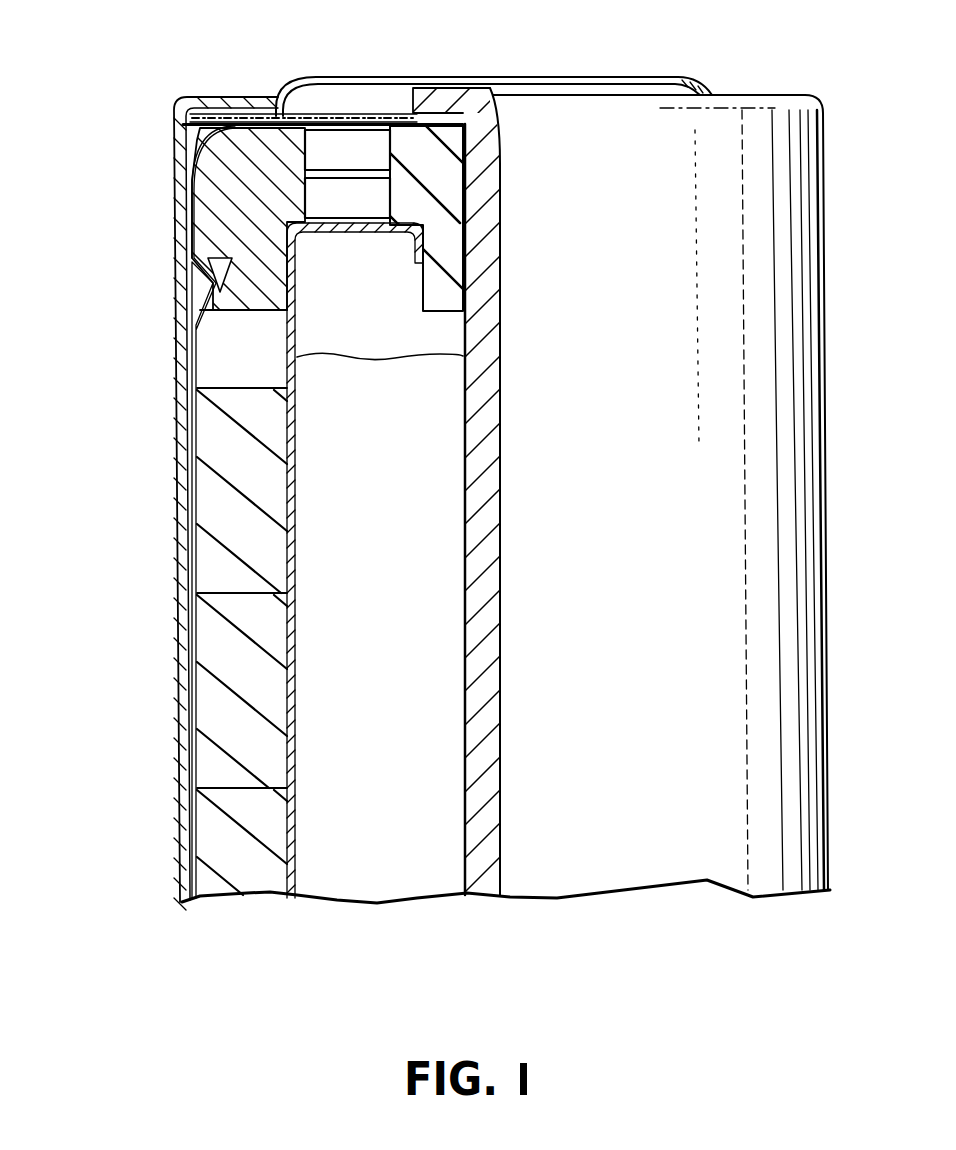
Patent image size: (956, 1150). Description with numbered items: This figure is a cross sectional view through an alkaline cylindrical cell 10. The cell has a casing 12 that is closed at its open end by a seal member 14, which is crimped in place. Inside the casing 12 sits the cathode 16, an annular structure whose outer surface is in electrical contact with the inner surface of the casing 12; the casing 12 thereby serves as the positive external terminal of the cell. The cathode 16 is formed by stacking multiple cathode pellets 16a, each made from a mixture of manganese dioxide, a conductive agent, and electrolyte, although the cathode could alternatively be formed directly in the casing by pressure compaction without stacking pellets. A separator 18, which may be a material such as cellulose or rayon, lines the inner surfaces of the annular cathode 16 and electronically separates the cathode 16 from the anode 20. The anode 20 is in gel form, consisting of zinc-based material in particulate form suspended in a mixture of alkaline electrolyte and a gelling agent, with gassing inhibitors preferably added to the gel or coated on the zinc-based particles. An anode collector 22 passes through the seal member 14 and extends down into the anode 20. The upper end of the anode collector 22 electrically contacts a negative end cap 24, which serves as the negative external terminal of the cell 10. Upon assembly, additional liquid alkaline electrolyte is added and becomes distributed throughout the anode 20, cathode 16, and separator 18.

The cylindrical cell 10 is at (150, 273).
The casing 12 is at (193, 450).
The seal member 14 is at (264, 147).
The cathode 16 is at (165, 630).
The cathode pellets 16a is at (212, 573).
The separator 18 is at (293, 893).
The anode 20 is at (403, 880).
The anode collector 22 is at (450, 97).
The negative end cap 24 is at (360, 78).